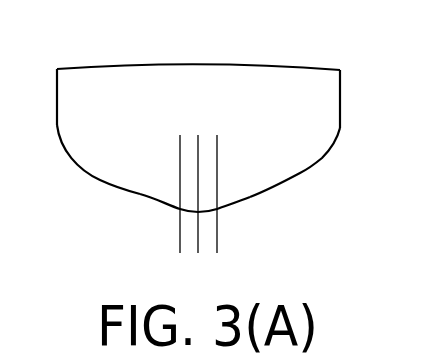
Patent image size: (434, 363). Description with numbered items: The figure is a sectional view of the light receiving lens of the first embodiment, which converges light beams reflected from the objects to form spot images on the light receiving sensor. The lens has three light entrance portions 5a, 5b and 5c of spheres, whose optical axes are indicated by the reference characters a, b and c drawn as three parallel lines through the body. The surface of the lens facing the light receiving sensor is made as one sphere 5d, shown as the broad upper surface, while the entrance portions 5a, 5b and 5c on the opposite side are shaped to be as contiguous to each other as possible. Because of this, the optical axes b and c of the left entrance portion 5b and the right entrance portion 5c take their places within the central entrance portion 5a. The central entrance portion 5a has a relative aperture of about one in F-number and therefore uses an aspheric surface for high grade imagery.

The central light entrance portion 5a is at (240, 205).
The left light entrance portion 5b is at (98, 180).
The right light entrance portion 5c is at (322, 160).
The sphere 5d is at (302, 67).
The optical axis a is at (198, 250).
The optical axis b is at (178, 248).
The optical axis c is at (218, 253).